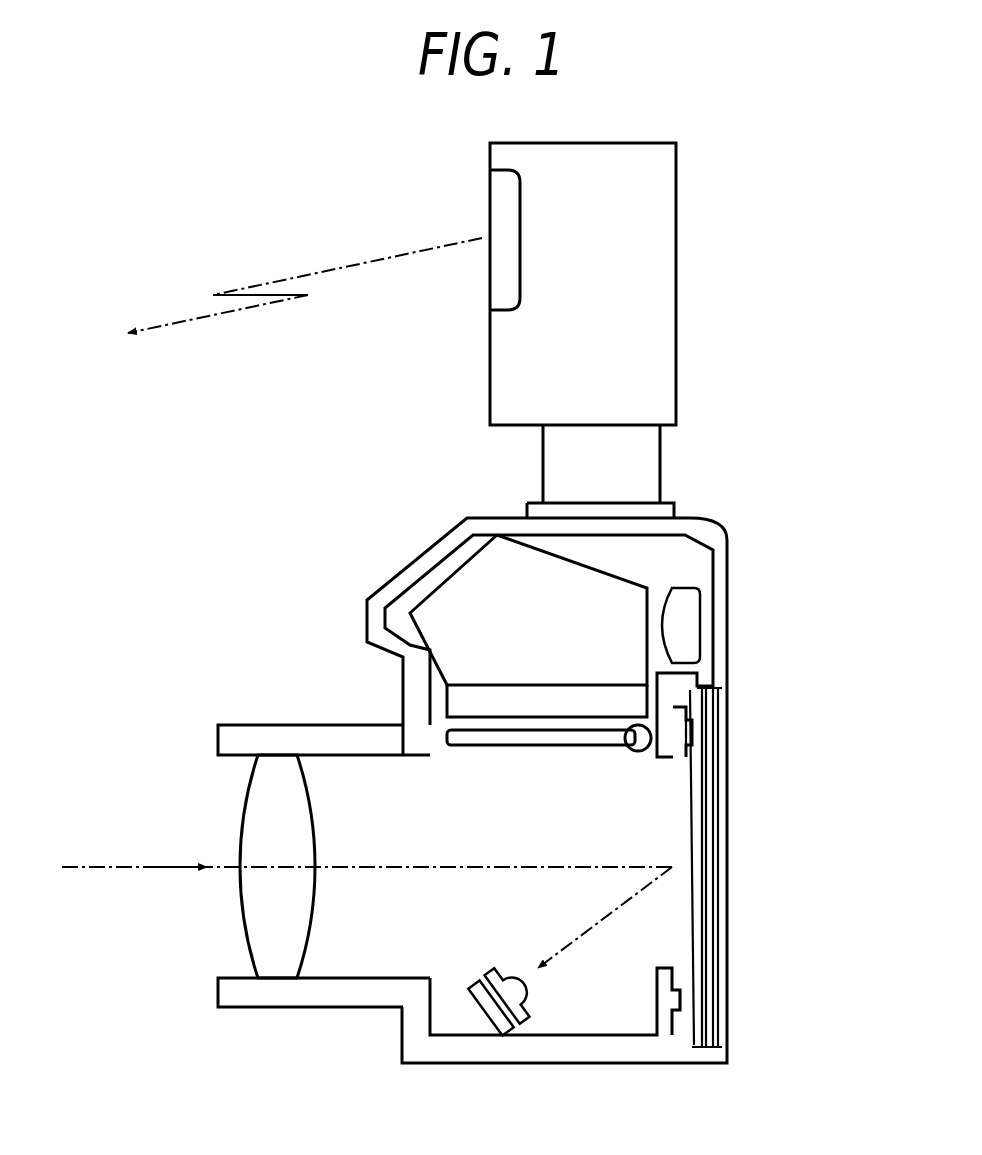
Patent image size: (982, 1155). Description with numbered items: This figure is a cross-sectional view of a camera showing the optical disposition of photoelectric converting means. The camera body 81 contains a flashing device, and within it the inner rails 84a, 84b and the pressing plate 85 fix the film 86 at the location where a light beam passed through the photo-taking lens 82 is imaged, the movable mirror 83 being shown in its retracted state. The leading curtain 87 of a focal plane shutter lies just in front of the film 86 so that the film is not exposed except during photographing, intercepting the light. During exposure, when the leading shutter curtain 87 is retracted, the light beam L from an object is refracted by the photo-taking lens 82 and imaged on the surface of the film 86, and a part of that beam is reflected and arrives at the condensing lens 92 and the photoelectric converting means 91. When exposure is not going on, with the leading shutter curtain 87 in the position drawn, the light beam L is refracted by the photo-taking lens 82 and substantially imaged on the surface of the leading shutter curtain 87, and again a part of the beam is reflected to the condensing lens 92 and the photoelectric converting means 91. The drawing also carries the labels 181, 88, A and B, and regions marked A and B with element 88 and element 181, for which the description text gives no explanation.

The flash/finder window 181 is at (500, 292).
The camera body 81 is at (413, 570).
The photo-taking lens 82 is at (250, 813).
The movable mirror 83 is at (463, 734).
The inner rail 84a is at (677, 735).
The inner rail 84b is at (677, 1010).
The pressing plate 85 is at (700, 853).
The film 86 is at (697, 893).
The leading curtain 87 is at (680, 917).
The pressure plate 88 is at (717, 797).
The photoelectric converting means 91 is at (490, 1008).
The condensing lens 92 is at (517, 1000).
The lens unit A is at (275, 683).
The camera body B is at (778, 647).
The light beam L is at (130, 868).